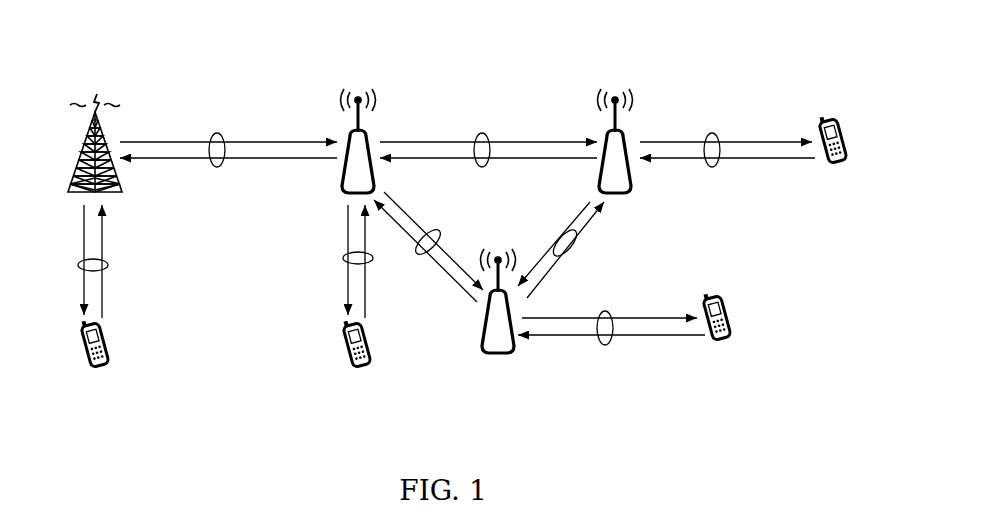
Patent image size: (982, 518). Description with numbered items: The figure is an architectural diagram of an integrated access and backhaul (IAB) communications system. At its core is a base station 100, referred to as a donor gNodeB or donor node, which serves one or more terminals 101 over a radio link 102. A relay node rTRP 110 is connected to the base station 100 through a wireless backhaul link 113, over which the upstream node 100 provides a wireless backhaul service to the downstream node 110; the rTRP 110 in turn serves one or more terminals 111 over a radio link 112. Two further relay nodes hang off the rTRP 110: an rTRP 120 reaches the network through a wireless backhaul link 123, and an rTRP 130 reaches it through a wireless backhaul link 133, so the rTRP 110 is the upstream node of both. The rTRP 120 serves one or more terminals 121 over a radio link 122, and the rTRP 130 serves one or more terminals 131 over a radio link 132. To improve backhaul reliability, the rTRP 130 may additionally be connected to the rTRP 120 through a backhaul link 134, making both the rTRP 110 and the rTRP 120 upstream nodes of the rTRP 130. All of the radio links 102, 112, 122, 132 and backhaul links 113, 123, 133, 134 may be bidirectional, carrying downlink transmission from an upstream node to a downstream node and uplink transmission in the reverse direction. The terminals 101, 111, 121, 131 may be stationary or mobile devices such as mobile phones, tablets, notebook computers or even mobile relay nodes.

The base station 100 is at (95, 98).
The terminal 101 is at (95, 372).
The radio link 102 is at (78, 263).
The relay node rTRP 110 is at (359, 90).
The terminal 111 is at (357, 372).
The radio link 112 is at (345, 258).
The wireless backhaul link 113 is at (220, 134).
The relay node rTRP 120 is at (614, 90).
The terminal 121 is at (850, 143).
The radio link 122 is at (715, 134).
The wireless backhaul link 123 is at (485, 134).
The relay node rTRP 130 is at (498, 358).
The terminal 131 is at (712, 350).
The radio link 132 is at (605, 346).
The wireless backhaul link 133 is at (423, 254).
The backhaul link 134 is at (576, 256).